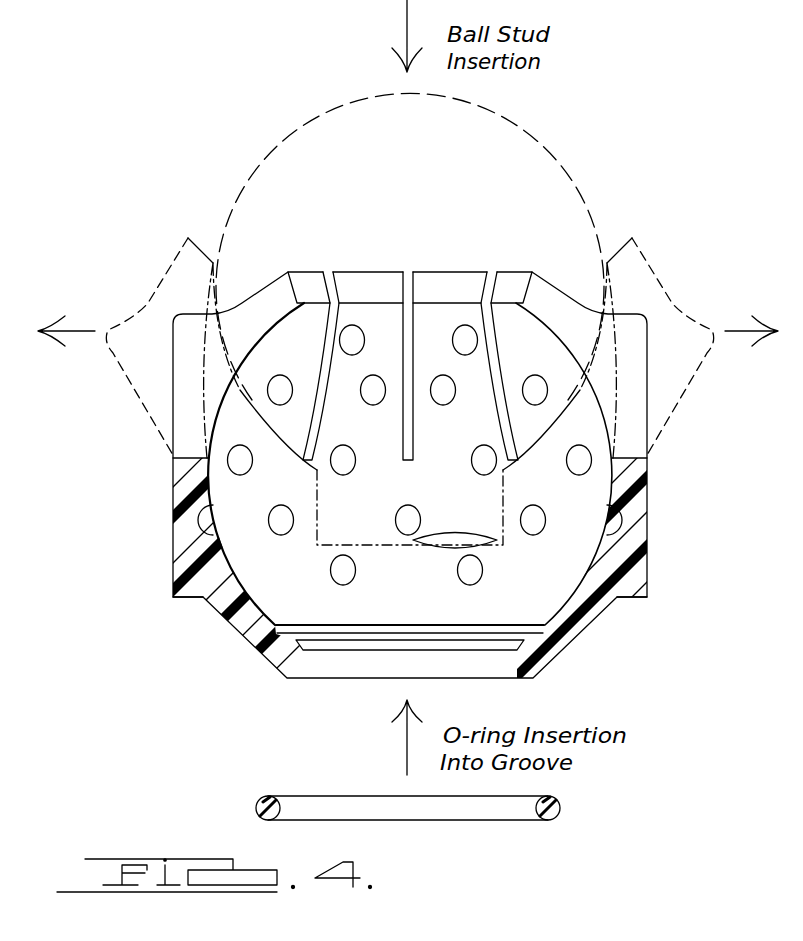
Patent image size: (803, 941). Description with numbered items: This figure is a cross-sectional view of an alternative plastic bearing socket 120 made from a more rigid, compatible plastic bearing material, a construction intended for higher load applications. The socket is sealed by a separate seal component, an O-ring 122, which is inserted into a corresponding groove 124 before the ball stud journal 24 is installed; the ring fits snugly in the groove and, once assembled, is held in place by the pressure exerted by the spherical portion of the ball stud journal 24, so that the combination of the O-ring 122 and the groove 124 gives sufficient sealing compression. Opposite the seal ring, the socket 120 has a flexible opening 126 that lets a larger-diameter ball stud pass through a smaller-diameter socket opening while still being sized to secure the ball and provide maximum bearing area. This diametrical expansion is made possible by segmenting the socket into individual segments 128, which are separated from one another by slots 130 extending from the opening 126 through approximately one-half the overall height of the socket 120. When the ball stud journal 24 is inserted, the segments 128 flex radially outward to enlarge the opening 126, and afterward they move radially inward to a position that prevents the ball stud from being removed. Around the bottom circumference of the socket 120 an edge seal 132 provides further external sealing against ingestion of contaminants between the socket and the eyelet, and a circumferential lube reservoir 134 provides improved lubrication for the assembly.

The ball stud journal 24 is at (593, 207).
The bearing socket 120 is at (170, 472).
The O-ring 122 is at (257, 800).
The groove 124 is at (283, 650).
The flexible opening 126 is at (352, 283).
The segments 128 is at (145, 304).
The slots 130 is at (496, 270).
The edge seal 132 is at (173, 600).
The circumferential lube reservoir 134 is at (200, 525).